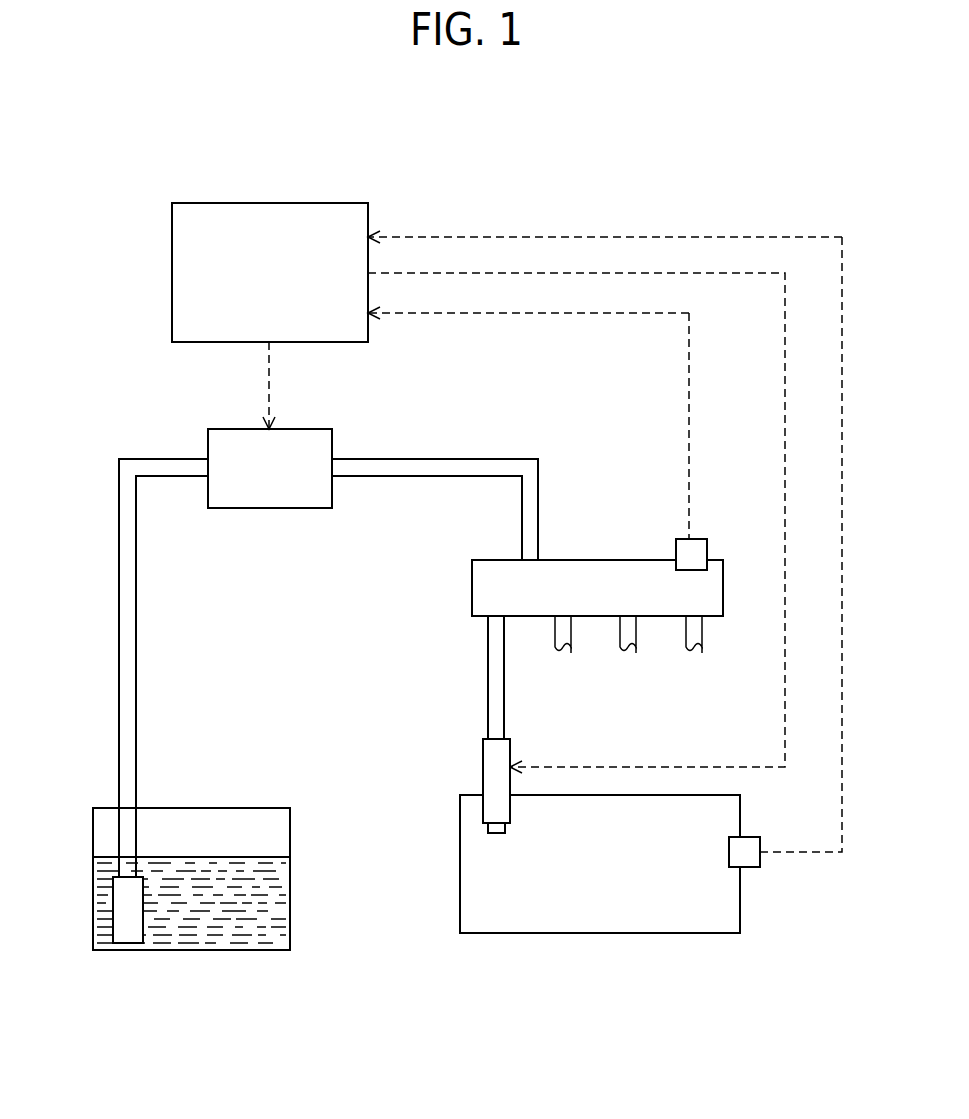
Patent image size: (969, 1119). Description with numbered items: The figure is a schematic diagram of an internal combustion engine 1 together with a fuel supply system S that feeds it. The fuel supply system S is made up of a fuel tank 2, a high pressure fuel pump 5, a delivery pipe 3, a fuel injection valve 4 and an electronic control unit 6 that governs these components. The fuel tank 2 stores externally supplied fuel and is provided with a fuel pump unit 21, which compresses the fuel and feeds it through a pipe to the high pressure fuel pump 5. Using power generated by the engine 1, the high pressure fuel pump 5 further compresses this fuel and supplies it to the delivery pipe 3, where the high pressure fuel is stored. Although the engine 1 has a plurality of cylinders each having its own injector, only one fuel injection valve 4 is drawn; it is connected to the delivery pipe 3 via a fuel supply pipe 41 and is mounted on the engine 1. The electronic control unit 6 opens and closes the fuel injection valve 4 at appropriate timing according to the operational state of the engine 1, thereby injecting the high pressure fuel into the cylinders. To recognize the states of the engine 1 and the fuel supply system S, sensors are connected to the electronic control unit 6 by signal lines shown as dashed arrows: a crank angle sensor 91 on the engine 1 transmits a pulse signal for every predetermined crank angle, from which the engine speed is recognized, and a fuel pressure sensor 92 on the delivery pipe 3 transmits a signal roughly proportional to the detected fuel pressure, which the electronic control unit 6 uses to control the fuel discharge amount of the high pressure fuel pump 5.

The fuel supply system S is at (122, 392).
The internal combustion engine 1 is at (475, 795).
The fuel tank 2 is at (220, 808).
The fuel pump unit 21 is at (113, 895).
The delivery pipe 3 is at (645, 560).
The fuel injection valve 4 is at (510, 739).
The fuel supply pipe 41 is at (488, 678).
The high pressure fuel pump 5 is at (215, 429).
The electronic control unit 6 is at (228, 203).
The crank angle sensor 91 is at (752, 837).
The fuel pressure sensor 92 is at (697, 539).